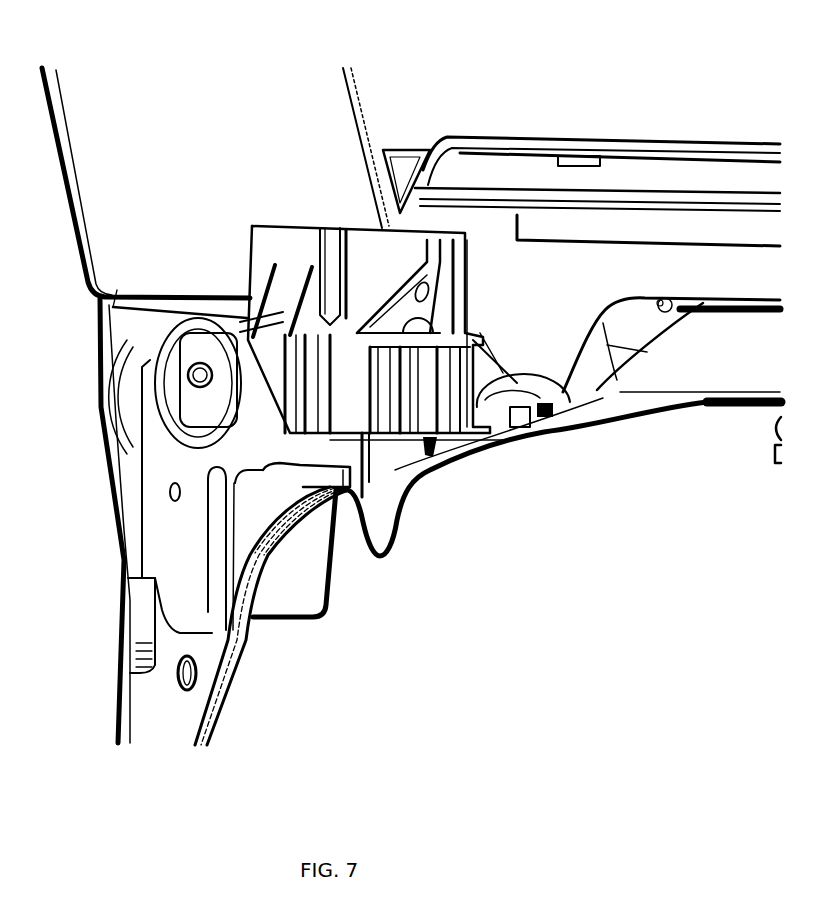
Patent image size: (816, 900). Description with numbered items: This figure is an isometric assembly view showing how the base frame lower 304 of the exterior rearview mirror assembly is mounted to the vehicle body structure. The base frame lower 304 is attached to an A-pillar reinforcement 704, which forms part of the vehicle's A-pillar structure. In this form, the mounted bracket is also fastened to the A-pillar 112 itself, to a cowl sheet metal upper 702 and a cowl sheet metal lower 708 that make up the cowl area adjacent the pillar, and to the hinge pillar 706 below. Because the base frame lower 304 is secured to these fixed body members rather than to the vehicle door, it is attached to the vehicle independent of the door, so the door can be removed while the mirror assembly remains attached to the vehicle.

The A-pillar 112 is at (232, 132).
The base frame lower 304 is at (270, 250).
The cowl sheet metal upper 702 is at (617, 323).
The A-pillar reinforcement 704 is at (397, 478).
The hinge pillar 706 is at (196, 666).
The cowl sheet metal lower 708 is at (624, 408).